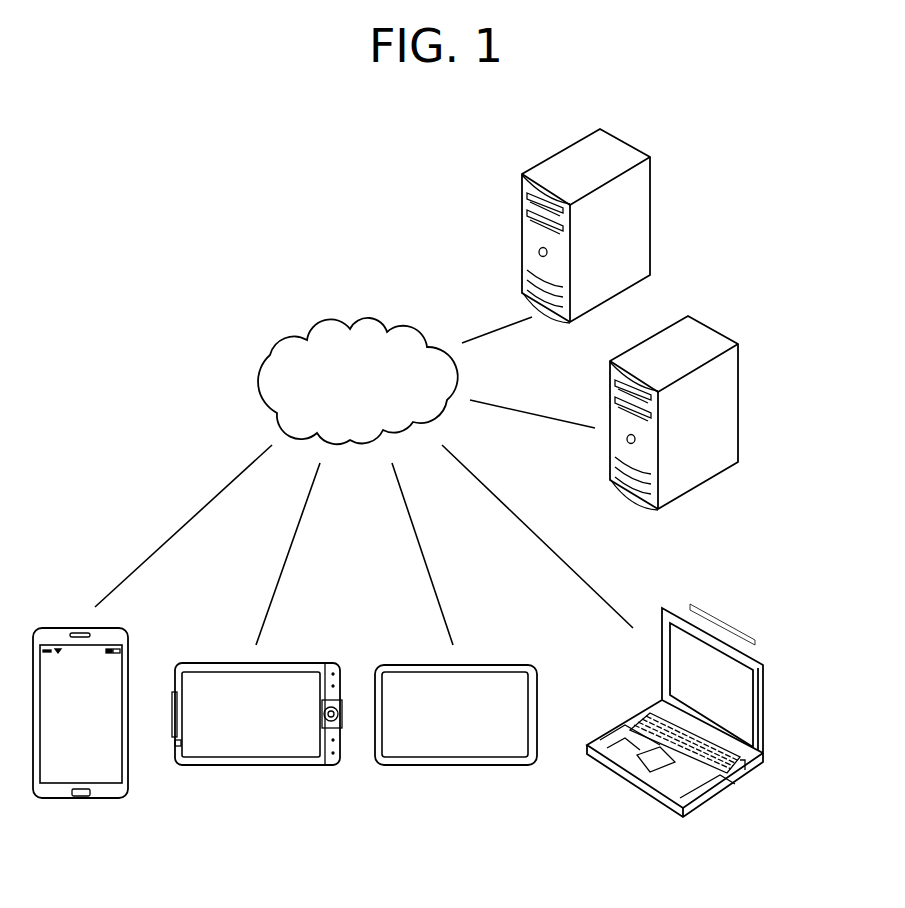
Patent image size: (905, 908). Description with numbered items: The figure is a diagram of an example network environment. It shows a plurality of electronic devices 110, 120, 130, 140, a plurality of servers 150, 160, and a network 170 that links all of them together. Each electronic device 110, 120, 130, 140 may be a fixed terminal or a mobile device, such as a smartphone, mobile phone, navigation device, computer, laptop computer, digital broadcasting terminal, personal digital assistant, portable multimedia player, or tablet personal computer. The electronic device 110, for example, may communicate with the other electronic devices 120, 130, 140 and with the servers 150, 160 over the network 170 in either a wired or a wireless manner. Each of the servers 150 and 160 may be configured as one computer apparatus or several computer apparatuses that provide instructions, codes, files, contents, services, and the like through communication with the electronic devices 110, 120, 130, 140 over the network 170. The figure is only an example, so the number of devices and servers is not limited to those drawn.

The electronic device 110 is at (80, 798).
The electronic device 120 is at (257, 765).
The electronic device 130 is at (457, 765).
The electronic device 140 is at (763, 708).
The server 150 is at (739, 402).
The server 160 is at (650, 217).
The network 170 is at (362, 318).